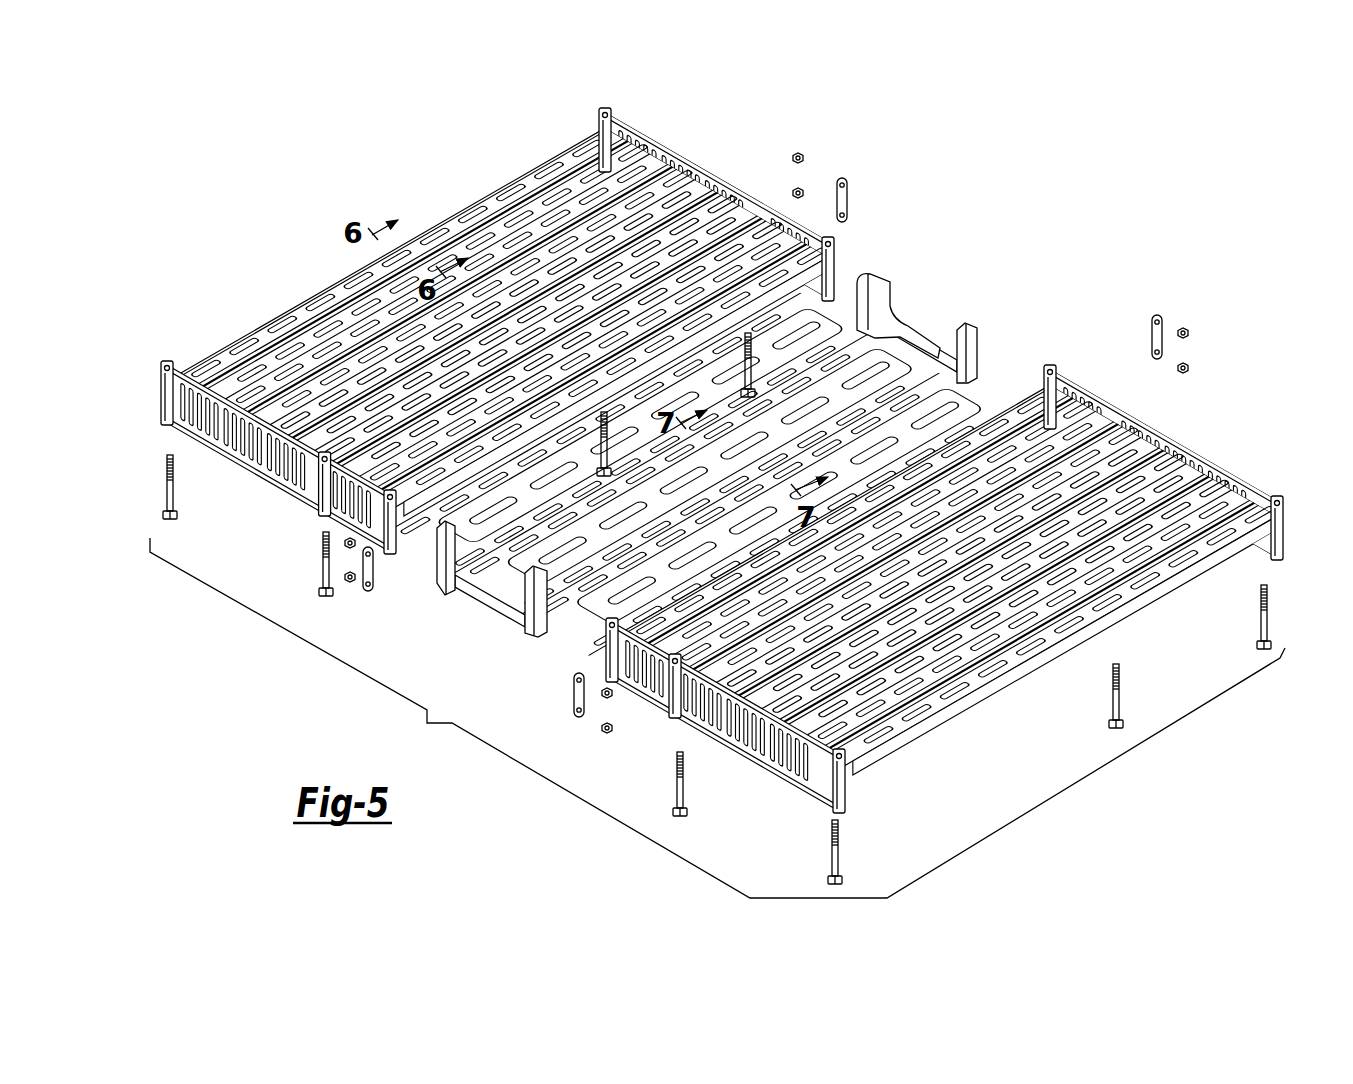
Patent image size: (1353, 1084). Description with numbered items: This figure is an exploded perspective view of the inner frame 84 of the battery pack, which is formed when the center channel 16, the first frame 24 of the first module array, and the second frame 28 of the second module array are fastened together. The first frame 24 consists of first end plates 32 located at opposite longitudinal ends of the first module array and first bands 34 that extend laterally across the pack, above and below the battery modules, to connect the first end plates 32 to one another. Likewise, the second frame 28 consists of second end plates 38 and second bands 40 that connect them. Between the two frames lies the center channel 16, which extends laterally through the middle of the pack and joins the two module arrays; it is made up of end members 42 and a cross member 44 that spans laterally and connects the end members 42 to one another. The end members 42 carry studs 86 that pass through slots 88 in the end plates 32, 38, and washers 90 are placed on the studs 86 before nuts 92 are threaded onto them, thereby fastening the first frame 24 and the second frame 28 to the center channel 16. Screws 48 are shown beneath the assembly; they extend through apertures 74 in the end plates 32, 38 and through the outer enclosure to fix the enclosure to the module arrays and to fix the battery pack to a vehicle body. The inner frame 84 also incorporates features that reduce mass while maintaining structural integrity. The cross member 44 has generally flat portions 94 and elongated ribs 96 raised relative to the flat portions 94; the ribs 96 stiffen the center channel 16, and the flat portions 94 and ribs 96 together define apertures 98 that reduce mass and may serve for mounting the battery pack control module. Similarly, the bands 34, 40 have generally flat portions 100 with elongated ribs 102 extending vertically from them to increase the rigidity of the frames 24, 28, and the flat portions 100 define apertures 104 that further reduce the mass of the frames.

The center channel 16 is at (700, 458).
The first frame 24 is at (500, 332).
The second frame 28 is at (944, 590).
The first end plates 32 is at (678, 160).
The first bands 34 is at (512, 185).
The second end plates 38 is at (1195, 455).
The second bands 40 is at (960, 430).
The end members 42 is at (470, 580).
The cross member 44 is at (932, 362).
The screws 48 is at (326, 590).
The apertures 74 is at (607, 118).
The inner frame 84 is at (717, 718).
The studs 86 is at (440, 552).
The slots 88 is at (826, 262).
The washers 90 is at (848, 195).
The nuts 92 is at (804, 193).
The flat portions 94 is at (870, 400).
The ribs 96 is at (590, 510).
The apertures 98 is at (830, 410).
The flat portions 100 is at (340, 268).
The ribs 102 is at (452, 228).
The apertures 104 is at (302, 318).